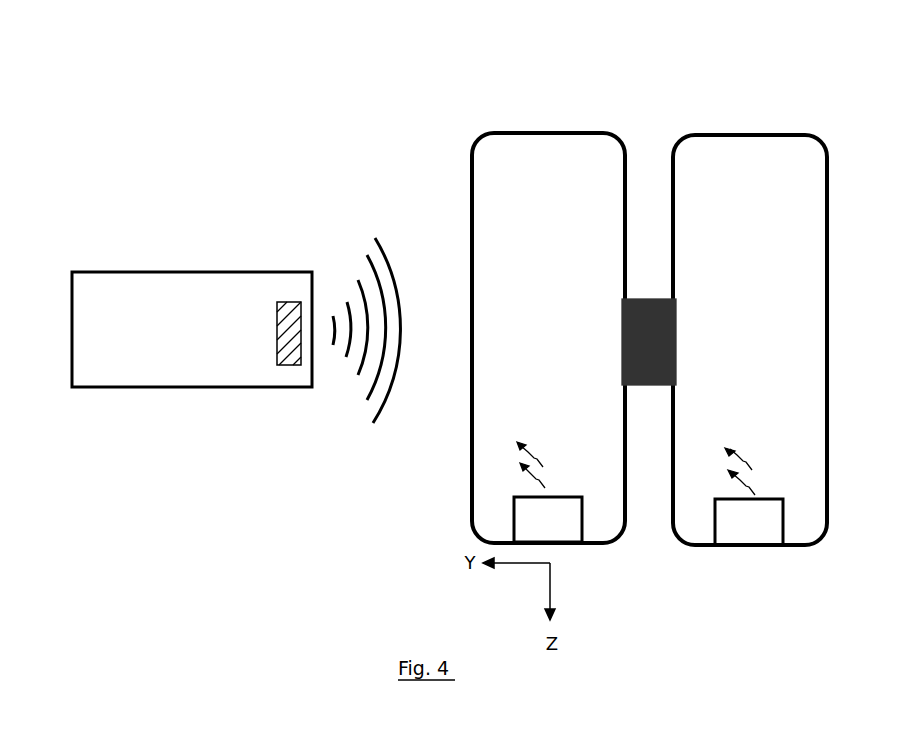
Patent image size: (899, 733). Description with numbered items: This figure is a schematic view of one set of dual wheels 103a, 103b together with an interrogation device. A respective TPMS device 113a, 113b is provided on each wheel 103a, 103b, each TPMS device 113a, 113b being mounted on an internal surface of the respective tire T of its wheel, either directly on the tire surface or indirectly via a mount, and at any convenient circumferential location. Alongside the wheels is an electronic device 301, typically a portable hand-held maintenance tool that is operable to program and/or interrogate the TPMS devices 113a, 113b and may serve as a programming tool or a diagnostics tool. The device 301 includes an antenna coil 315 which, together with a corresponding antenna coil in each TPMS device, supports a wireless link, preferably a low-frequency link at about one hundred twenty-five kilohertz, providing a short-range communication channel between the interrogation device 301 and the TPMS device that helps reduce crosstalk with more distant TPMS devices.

The electronic device 301 is at (178, 388).
The antenna coil 315 is at (290, 366).
The wheel 103a is at (513, 129).
The wheel 103b is at (703, 129).
The TPMS device 113a is at (548, 492).
The TPMS device 113b is at (749, 496).
The tire T is at (472, 492).